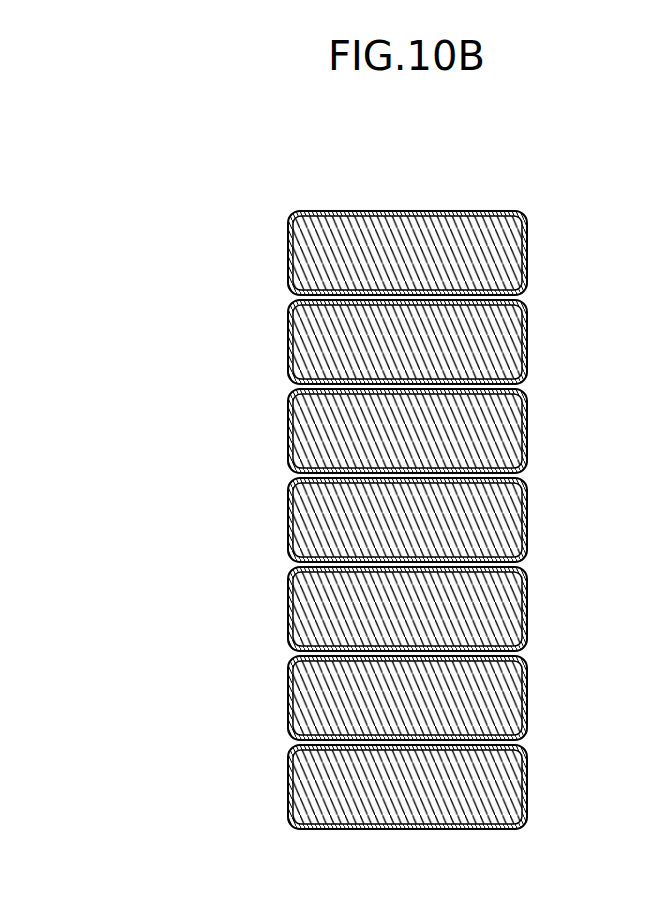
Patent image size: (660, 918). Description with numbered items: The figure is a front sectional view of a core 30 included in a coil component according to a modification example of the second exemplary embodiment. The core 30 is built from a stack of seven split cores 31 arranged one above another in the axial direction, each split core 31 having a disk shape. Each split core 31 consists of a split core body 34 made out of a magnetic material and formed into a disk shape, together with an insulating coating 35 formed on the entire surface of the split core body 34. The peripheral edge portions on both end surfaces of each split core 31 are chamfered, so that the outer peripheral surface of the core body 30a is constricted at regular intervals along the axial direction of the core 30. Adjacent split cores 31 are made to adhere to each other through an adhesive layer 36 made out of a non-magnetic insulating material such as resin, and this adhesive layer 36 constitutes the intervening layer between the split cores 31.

The core 30 is at (428, 132).
The core body 30a is at (594, 245).
The split core 31 is at (517, 262).
The split core body 34 is at (434, 215).
The insulating coating 35 is at (289, 243).
The adhesive layer 36 is at (290, 296).